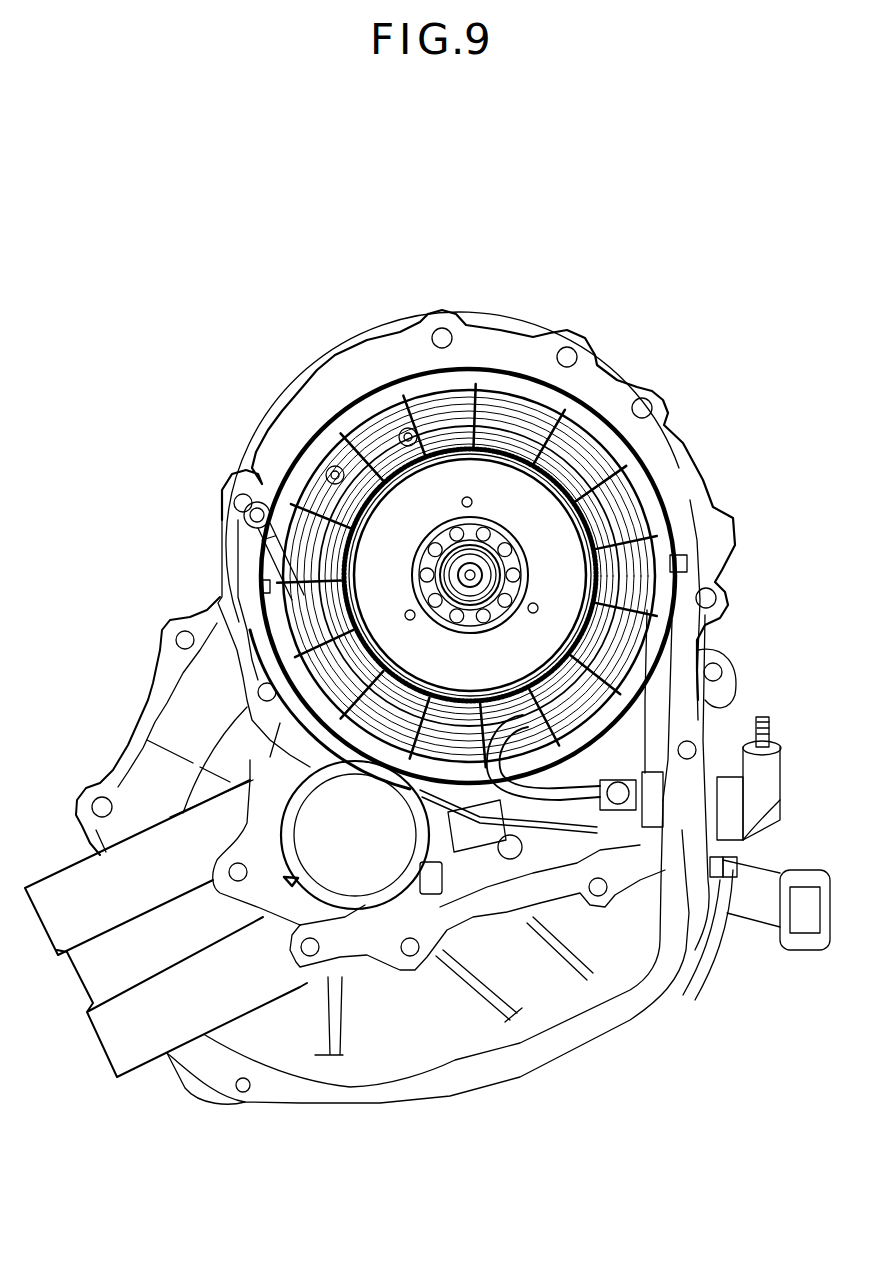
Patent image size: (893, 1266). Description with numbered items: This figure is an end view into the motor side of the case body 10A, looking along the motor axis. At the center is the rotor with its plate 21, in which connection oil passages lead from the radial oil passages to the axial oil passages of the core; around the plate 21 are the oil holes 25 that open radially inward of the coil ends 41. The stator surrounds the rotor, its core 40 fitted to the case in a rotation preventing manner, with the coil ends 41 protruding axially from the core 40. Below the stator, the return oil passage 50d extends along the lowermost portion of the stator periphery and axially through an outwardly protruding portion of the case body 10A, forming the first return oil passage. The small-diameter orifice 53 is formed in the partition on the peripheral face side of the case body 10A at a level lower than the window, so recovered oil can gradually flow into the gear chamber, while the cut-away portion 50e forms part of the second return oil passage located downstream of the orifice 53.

The case body 10A is at (148, 745).
The plate 21 is at (419, 527).
The oil hole 25 is at (472, 500).
The core 40 is at (593, 407).
The coil ends 41 is at (353, 428).
The return oil passage 50d is at (420, 793).
The cut-away portion 50e is at (303, 880).
The orifice 53 is at (434, 885).